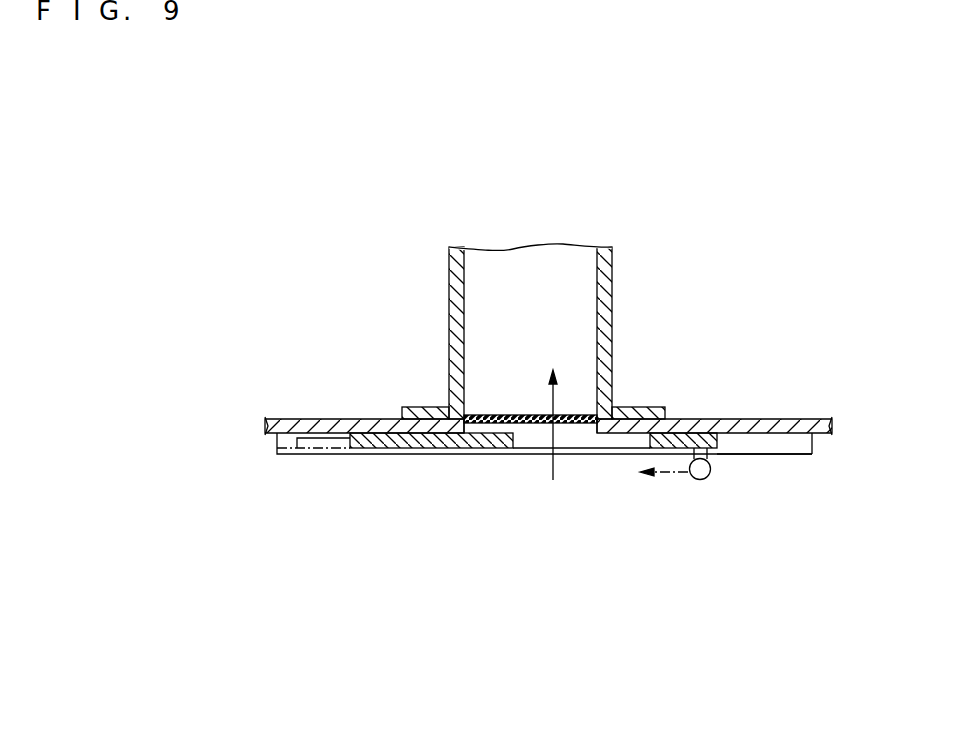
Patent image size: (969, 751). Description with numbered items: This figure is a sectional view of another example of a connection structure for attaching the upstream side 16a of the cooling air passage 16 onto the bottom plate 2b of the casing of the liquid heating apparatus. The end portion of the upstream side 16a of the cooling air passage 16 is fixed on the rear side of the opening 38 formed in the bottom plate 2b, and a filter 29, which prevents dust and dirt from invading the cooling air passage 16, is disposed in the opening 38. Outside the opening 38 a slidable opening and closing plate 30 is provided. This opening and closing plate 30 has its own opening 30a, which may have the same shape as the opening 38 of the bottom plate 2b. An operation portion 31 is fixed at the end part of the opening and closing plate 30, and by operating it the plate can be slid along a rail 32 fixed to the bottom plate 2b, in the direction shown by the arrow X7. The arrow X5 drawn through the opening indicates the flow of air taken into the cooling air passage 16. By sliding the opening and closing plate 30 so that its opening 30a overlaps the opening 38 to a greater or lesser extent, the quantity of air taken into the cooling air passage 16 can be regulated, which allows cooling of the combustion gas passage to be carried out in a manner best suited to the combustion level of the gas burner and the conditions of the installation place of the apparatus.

The cooling air passage 16 is at (580, 268).
The upstream side of the cooling air passage 16a is at (456, 381).
The filter 29 is at (570, 414).
The bottom plate 2b is at (813, 419).
The opening and closing plate 30 is at (289, 444).
The opening of the opening and closing plate 30a is at (518, 442).
The opening 38 is at (477, 442).
The operation portion 31 is at (711, 474).
The rail 32 is at (793, 445).
The direction arrow X5 is at (556, 424).
The arrow X7 is at (662, 473).